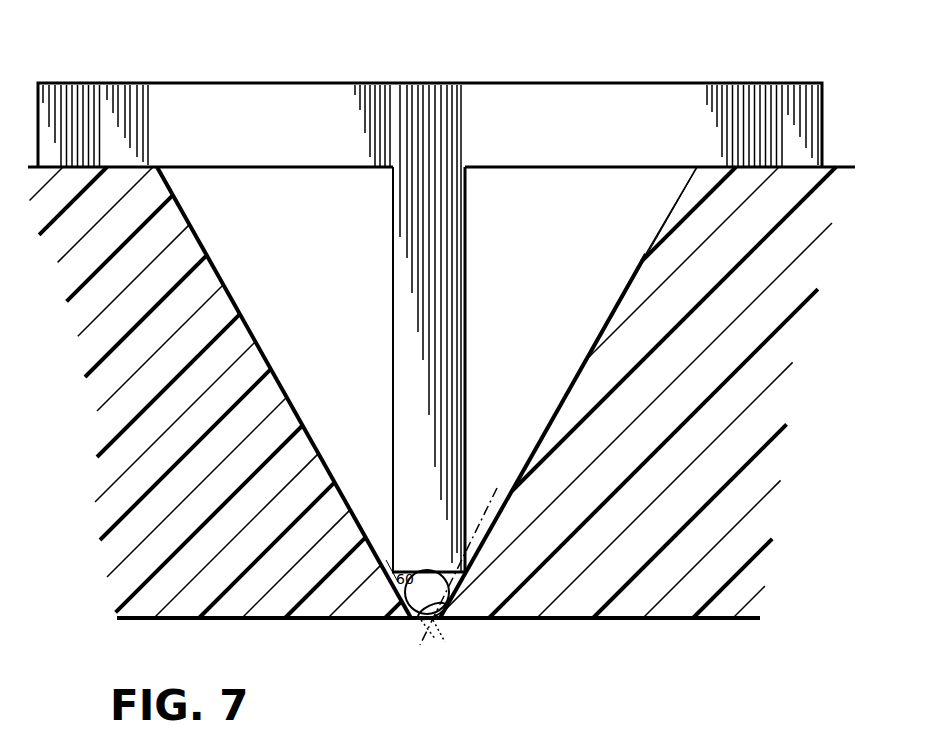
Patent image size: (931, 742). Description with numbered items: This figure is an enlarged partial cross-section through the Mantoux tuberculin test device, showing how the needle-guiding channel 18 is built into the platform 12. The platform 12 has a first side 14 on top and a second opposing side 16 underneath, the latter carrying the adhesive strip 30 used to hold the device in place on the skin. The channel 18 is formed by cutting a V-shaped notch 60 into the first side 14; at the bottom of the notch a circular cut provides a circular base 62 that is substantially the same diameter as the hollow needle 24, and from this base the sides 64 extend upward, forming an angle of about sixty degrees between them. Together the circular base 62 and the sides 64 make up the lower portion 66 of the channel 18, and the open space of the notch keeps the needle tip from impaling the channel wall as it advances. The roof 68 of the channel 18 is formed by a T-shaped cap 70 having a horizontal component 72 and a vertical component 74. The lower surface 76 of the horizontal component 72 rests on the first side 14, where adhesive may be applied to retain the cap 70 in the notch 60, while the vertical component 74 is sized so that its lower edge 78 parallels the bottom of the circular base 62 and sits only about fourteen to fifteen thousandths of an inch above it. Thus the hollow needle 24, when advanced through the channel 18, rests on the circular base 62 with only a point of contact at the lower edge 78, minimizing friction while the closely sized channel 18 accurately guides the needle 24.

The platform 12 is at (95, 588).
The first side 14 is at (843, 165).
The second opposing side 16 is at (622, 620).
The channel 18 is at (425, 630).
The hollow needle 24 is at (465, 555).
The adhesive strip 30 is at (212, 620).
The V-shaped notch 60 is at (578, 309).
The circular base 62 is at (418, 610).
The sides 64 is at (244, 316).
The lower portion 66 is at (456, 580).
The roof 68 is at (441, 573).
The T-shaped cap 70 is at (455, 297).
The horizontal component 72 is at (602, 149).
The vertical component 74 is at (393, 348).
The lower surface 76 is at (320, 172).
The lower edge 78 is at (418, 572).